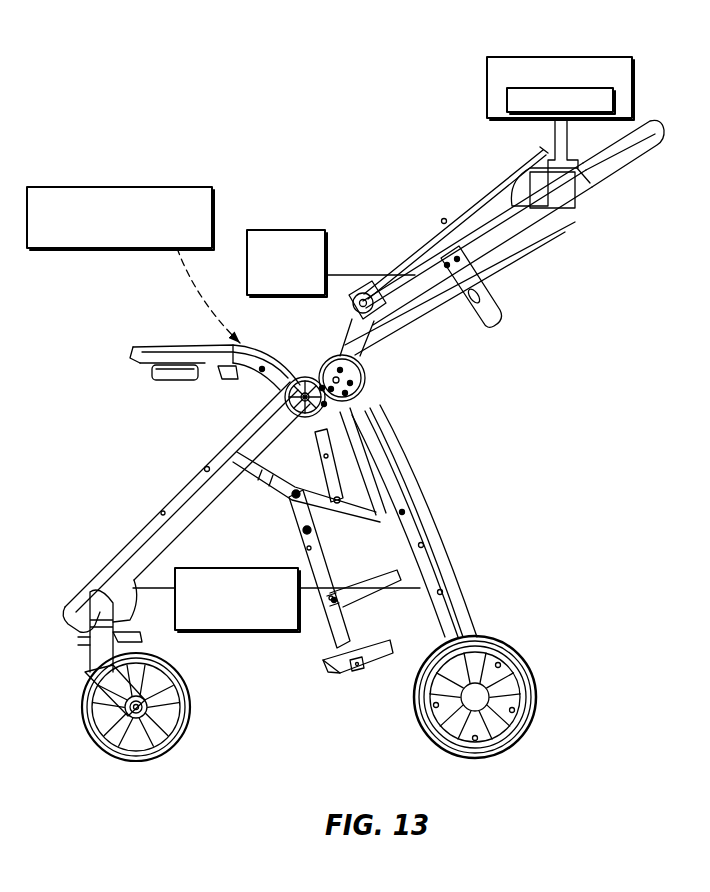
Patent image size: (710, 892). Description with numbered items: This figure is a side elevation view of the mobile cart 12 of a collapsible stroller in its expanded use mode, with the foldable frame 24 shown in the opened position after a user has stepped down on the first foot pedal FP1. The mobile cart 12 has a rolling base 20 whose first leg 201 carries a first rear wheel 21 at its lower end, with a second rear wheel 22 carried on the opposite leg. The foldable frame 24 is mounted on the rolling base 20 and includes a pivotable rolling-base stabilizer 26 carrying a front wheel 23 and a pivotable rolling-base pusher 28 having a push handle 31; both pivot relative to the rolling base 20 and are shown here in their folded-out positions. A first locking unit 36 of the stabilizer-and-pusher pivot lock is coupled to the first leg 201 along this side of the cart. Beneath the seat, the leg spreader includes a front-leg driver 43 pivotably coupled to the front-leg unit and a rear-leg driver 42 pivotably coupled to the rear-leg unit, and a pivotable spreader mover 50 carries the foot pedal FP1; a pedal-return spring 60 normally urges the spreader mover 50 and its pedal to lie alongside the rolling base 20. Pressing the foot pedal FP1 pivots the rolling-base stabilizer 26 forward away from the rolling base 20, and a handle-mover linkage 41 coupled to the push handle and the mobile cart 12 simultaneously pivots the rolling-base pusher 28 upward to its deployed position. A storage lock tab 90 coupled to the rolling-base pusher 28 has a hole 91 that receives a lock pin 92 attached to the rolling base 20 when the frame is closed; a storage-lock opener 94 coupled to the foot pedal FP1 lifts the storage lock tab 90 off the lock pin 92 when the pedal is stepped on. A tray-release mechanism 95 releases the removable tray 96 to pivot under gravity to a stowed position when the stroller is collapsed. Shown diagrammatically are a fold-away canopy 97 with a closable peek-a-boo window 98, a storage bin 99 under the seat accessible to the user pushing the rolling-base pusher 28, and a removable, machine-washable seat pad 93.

The mobile cart 12 is at (477, 598).
The rolling base 20 is at (443, 556).
The first leg 201 is at (452, 584).
The first rear wheel 21 is at (432, 710).
The second rear wheel 22 is at (434, 750).
The front wheel 23 is at (100, 753).
The foldable frame 24 is at (42, 478).
The rolling-base stabilizer 26 is at (120, 543).
The rolling-base pusher 28 is at (478, 228).
The push handle 31 is at (642, 150).
The first locking unit 36 is at (364, 398).
The handle-mover linkage 41 is at (343, 470).
The rear-leg driver 42 is at (364, 499).
The front-leg driver 43 is at (258, 462).
The spreader mover 50 is at (347, 622).
The pedal-return spring 60 is at (263, 393).
The storage lock tab 90 is at (506, 304).
The hole 91 is at (482, 324).
The lock pin 92 is at (421, 536).
The seat pad 93 is at (293, 230).
The storage-lock opener 94 is at (376, 575).
The tray-release mechanism 95 is at (103, 187).
The removable tray 96 is at (172, 338).
The fold-away canopy 97 is at (558, 88).
The peek-a-boo window 98 is at (613, 101).
The storage bin 99 is at (240, 568).
The first foot pedal FP1 is at (333, 677).